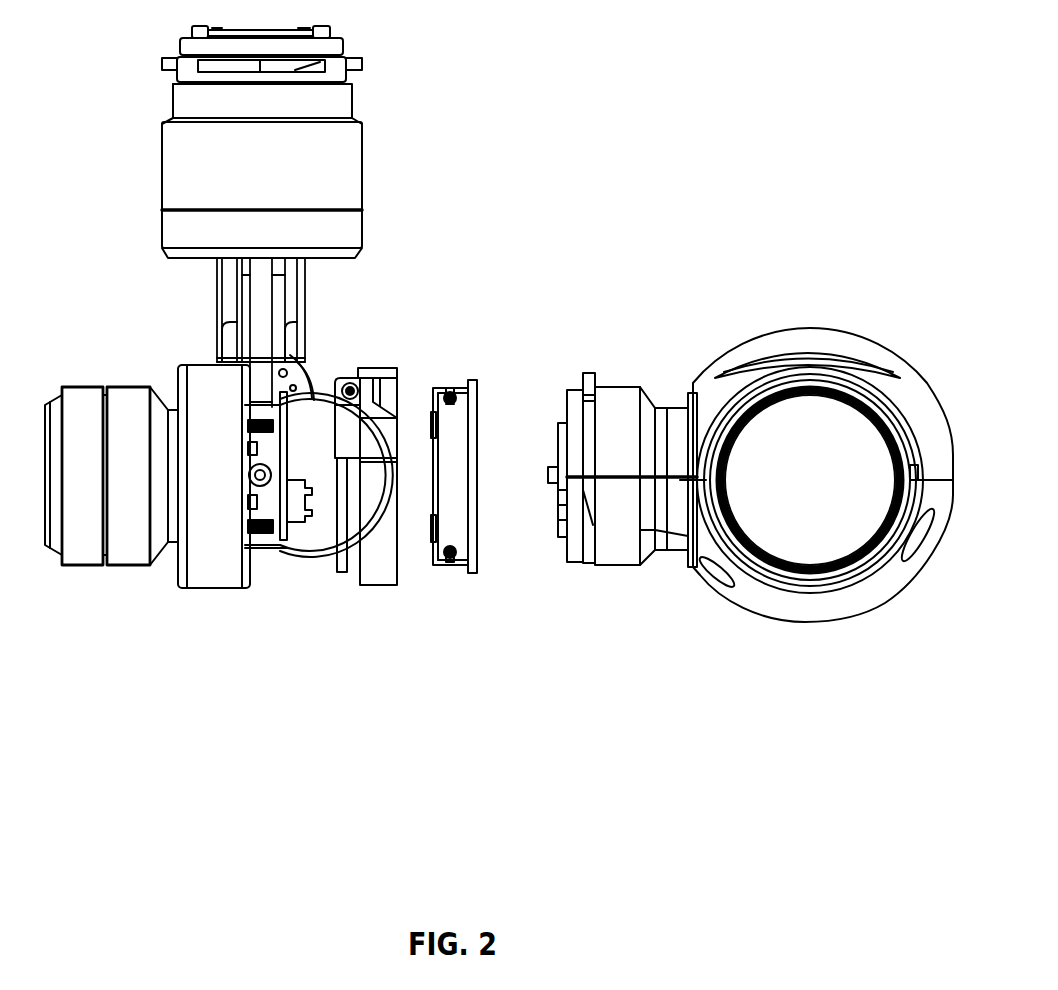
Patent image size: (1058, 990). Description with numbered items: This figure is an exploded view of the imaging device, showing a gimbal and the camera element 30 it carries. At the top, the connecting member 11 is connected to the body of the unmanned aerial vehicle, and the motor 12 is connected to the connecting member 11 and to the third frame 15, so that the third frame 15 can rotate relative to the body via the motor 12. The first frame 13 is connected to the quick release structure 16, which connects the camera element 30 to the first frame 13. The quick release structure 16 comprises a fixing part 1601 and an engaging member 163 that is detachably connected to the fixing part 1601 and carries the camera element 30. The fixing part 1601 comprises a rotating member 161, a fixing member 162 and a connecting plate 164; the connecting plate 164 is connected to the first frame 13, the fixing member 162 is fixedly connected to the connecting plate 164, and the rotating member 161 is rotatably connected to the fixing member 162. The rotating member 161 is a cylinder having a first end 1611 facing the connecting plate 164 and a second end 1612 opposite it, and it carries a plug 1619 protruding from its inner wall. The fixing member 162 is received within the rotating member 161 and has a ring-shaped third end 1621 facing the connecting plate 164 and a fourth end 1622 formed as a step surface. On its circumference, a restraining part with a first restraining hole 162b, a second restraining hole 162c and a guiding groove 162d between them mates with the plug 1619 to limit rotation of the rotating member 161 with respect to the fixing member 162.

The connecting member 11 is at (185, 52).
The motor 12 is at (175, 167).
The third frame 15 is at (262, 312).
The first frame 13 is at (202, 565).
The connecting plate 164 is at (283, 540).
The first end 1611 is at (340, 572).
The plug 1619 is at (350, 383).
The second end 1612 is at (410, 390).
The rotating member 161 is at (385, 573).
The fixing member 162 is at (514, 480).
The third end 1621 is at (432, 405).
The fourth end 1622 is at (478, 535).
The first restraining hole 162b is at (457, 555).
The second restraining hole 162c is at (453, 388).
The guiding groove 162d is at (455, 388).
The fixing part 1601 is at (493, 702).
The engaging member 163 is at (577, 537).
The quick release structure 16 is at (652, 777).
The camera element 30 is at (713, 383).